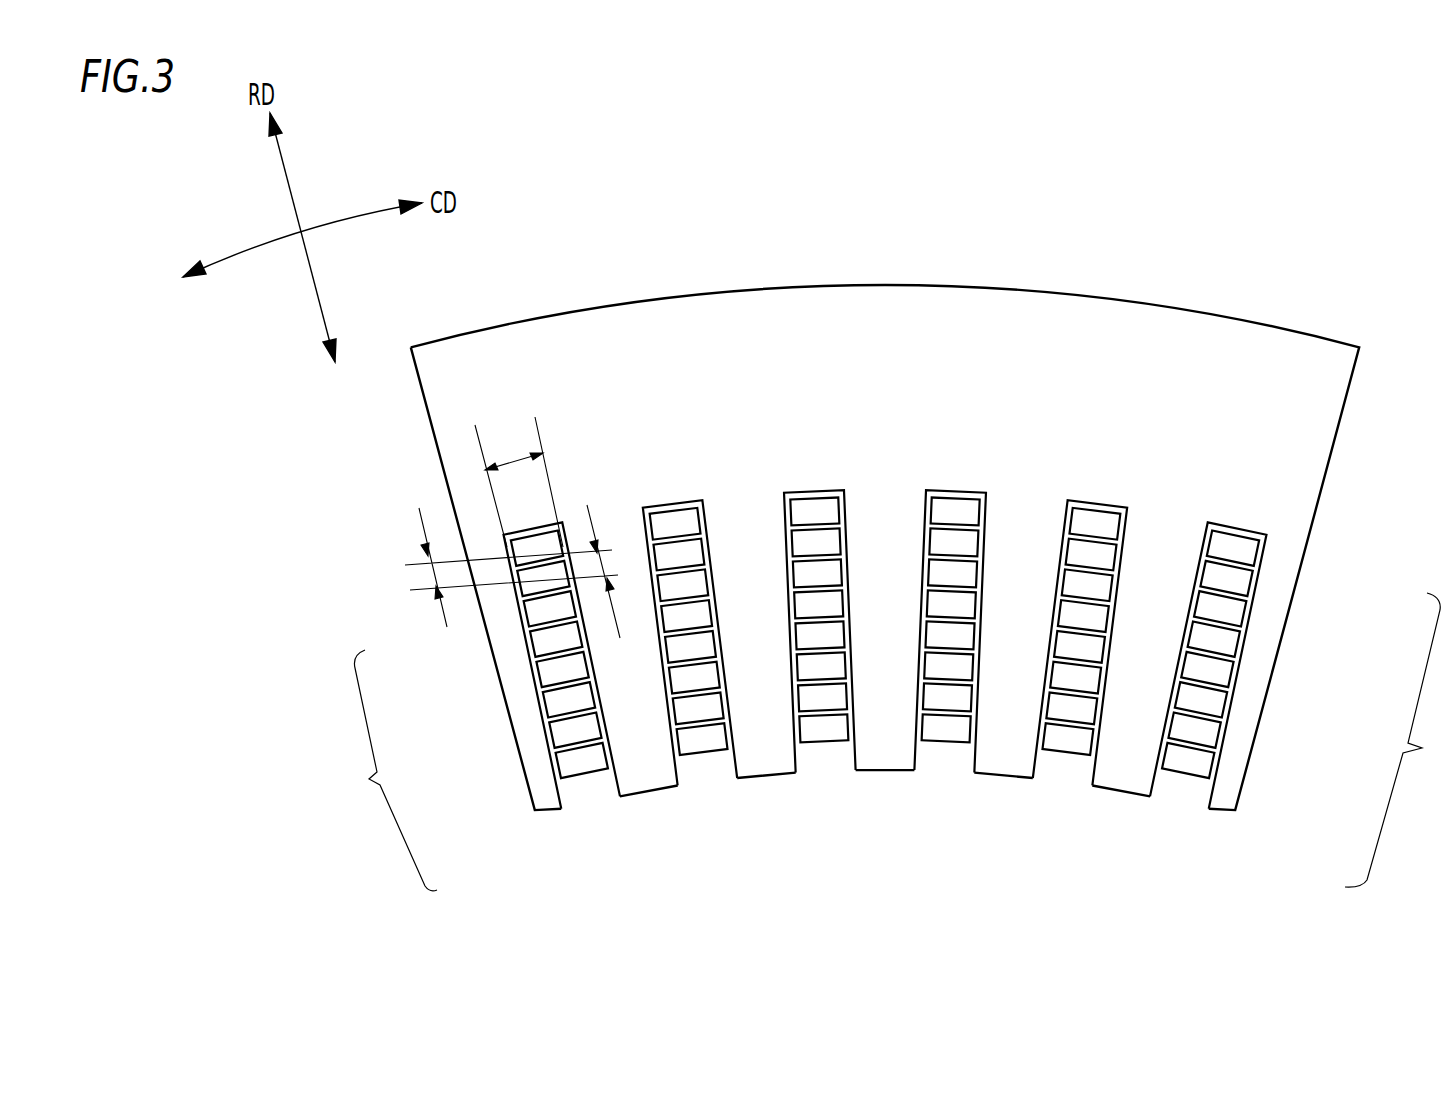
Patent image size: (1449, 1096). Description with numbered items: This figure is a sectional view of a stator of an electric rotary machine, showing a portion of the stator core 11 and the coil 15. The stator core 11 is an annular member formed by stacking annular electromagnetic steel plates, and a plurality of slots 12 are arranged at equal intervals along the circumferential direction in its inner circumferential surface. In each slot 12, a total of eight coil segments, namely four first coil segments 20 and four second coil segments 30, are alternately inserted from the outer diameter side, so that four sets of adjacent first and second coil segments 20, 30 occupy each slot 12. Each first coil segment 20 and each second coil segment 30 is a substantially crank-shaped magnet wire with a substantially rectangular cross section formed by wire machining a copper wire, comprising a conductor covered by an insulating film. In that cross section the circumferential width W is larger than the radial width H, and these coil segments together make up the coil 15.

The stator core 11 is at (849, 285).
The slot 12 is at (848, 640).
The coil 15 is at (892, 742).
The first coil segment 20 is at (570, 763).
The second coil segment 30 is at (605, 713).
The circumferential width W is at (519, 482).
The radial width H is at (509, 571).